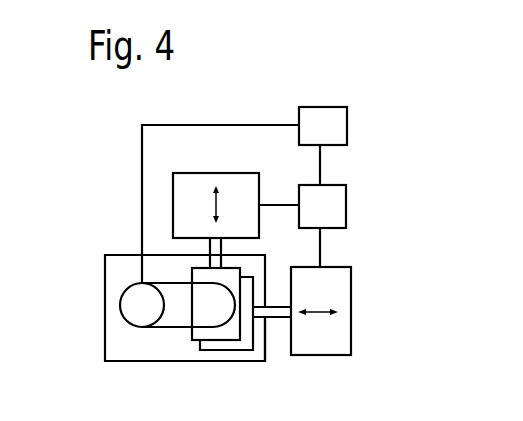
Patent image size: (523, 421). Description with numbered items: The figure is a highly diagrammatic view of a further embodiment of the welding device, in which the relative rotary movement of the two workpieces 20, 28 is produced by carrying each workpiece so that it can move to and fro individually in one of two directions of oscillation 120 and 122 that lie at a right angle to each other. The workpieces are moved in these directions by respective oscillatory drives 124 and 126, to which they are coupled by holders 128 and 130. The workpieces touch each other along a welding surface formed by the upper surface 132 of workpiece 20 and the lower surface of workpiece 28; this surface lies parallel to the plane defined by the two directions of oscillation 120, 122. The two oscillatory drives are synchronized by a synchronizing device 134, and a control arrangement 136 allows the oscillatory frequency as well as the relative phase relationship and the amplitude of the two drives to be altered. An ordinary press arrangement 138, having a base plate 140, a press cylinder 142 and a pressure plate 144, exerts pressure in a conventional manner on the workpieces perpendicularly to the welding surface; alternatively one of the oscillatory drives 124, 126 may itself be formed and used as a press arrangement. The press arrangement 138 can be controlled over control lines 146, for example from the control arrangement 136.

The workpiece 20 is at (224, 351).
The workpiece 28 is at (192, 340).
The direction of oscillation 120 is at (318, 312).
The direction of oscillation 122 is at (216, 202).
The oscillatory drive 124 is at (349, 337).
The oscillatory drive 126 is at (212, 173).
The holder 128 is at (283, 318).
The holder 130 is at (221, 250).
The upper surface of workpiece 132 is at (257, 350).
The synchronizing device 134 is at (347, 208).
The control arrangement 136 is at (347, 127).
The press arrangement 138 is at (105, 300).
The base plate 140 is at (140, 361).
The press cylinder 142 is at (133, 313).
The pressure plate 144 is at (217, 318).
The control lines 146 is at (212, 124).